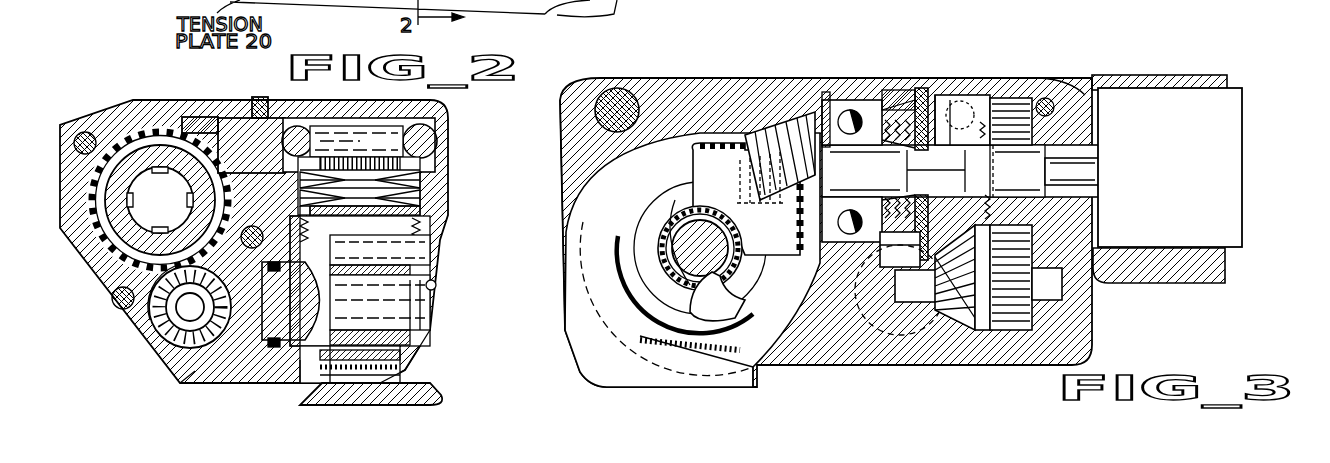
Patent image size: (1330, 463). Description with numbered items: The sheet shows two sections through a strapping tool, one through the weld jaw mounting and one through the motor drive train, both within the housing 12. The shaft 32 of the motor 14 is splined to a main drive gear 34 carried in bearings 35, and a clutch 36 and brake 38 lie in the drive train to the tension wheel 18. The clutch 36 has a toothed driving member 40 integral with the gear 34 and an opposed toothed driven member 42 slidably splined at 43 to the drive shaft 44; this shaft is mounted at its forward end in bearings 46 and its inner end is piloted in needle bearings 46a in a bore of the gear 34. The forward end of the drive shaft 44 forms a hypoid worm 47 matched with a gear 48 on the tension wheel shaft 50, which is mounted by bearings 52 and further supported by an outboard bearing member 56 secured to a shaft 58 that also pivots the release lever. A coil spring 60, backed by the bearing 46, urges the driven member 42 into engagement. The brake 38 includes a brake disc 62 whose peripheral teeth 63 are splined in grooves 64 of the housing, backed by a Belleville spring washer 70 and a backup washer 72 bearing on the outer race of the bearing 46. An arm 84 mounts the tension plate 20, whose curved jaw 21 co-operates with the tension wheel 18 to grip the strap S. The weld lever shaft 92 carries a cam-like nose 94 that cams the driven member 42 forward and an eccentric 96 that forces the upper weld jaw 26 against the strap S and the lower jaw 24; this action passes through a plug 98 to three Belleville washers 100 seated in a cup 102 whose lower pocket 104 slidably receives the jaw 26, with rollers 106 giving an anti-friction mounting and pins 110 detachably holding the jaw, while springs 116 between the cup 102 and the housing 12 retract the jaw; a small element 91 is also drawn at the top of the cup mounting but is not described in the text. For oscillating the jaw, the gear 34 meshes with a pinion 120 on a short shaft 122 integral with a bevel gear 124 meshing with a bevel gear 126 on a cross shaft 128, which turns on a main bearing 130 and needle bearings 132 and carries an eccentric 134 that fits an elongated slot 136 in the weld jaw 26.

In FIG. 3, the housing 12 is at (650, 85).
In FIG. 3, the motor 14 is at (1193, 151).
In FIG. 3, the tension wheel 18 is at (637, 300).
In FIG. 3, the tension plate 20 is at (608, 376).
In FIG. 3, the curved jaw 21 is at (752, 366).
In FIG. 2, the lower jaw 24 is at (438, 400).
In FIG. 2, the upper weld jaw 26 is at (420, 362).
In FIG. 3, the shaft of the motor 32 is at (1092, 172).
In FIG. 2, the main drive gear 34 is at (120, 258).
In FIG. 3, the main drive gear 34 is at (1068, 76).
In FIG. 3, the bearings 35 is at (1060, 104).
In FIG. 3, the clutch 36 is at (987, 117).
In FIG. 3, the brake 38 is at (912, 125).
In FIG. 3, the toothed driving member 40 is at (990, 110).
In FIG. 3, the toothed driven member 42 is at (973, 110).
In FIG. 2, the spline 43 is at (150, 233).
In FIG. 3, the spline 43 is at (918, 169).
In FIG. 2, the drive shaft 44 is at (172, 210).
In FIG. 3, the drive shaft 44 is at (853, 186).
In FIG. 3, the bearings 46 is at (797, 137).
In FIG. 3, the needle bearings 46a is at (1030, 163).
In FIG. 3, the hypoid worm or pinion 47 is at (758, 143).
In FIG. 3, the gear 48 is at (703, 168).
In FIG. 3, the shaft for the tension wheel 50 is at (710, 232).
In FIG. 3, the bearings 52 is at (675, 212).
In FIG. 3, the outboard bearing member 56 is at (705, 314).
In FIG. 3, the shaft 58 is at (617, 97).
In FIG. 3, the coil spring 60 is at (885, 133).
In FIG. 3, the brake disc 62 is at (878, 254).
In FIG. 3, the peripheral teeth 63 is at (884, 268).
In FIG. 3, the grooves 64 is at (888, 95).
In FIG. 3, the Belleville-type spring washer 70 is at (905, 130).
In FIG. 3, the backup washer 72 is at (828, 108).
In FIG. 3, the arm 84 is at (578, 358).
In FIG. 2, the pin 91 is at (258, 98).
In FIG. 2, the weld lever shaft 92 is at (452, 125).
In FIG. 2, the cam-like nose 94 is at (199, 122).
In FIG. 2, the eccentric portion 96 is at (328, 127).
In FIG. 2, the plug 98 is at (430, 167).
In FIG. 2, the Belleville washers 100 is at (425, 190).
In FIG. 2, the cup 102 is at (290, 158).
In FIG. 2, the lower pocket 104 is at (430, 213).
In FIG. 2, the rollers 106 is at (418, 230).
In FIG. 2, the pins 110 is at (428, 258).
In FIG. 2, the springs 116 is at (448, 242).
In FIG. 3, the pinion 120 is at (1063, 306).
In FIG. 2, the short shaft 122 is at (183, 312).
In FIG. 3, the short shaft 122 is at (1063, 294).
In FIG. 2, the bevel gear 124 is at (166, 340).
In FIG. 3, the bevel gear 124 is at (966, 337).
In FIG. 2, the bevel gear 126 is at (190, 372).
In FIG. 3, the bevel gear 126 is at (867, 342).
In FIG. 2, the cross shaft 128 is at (340, 365).
In FIG. 3, the cross shaft 128 is at (897, 344).
In FIG. 2, the main bearing 130 is at (270, 378).
In FIG. 2, the needle bearings 132 is at (437, 285).
In FIG. 2, the eccentric 134 is at (383, 299).
In FIG. 2, the elongated slot 136 is at (385, 268).
In FIG. 2, the strap S is at (300, 388).